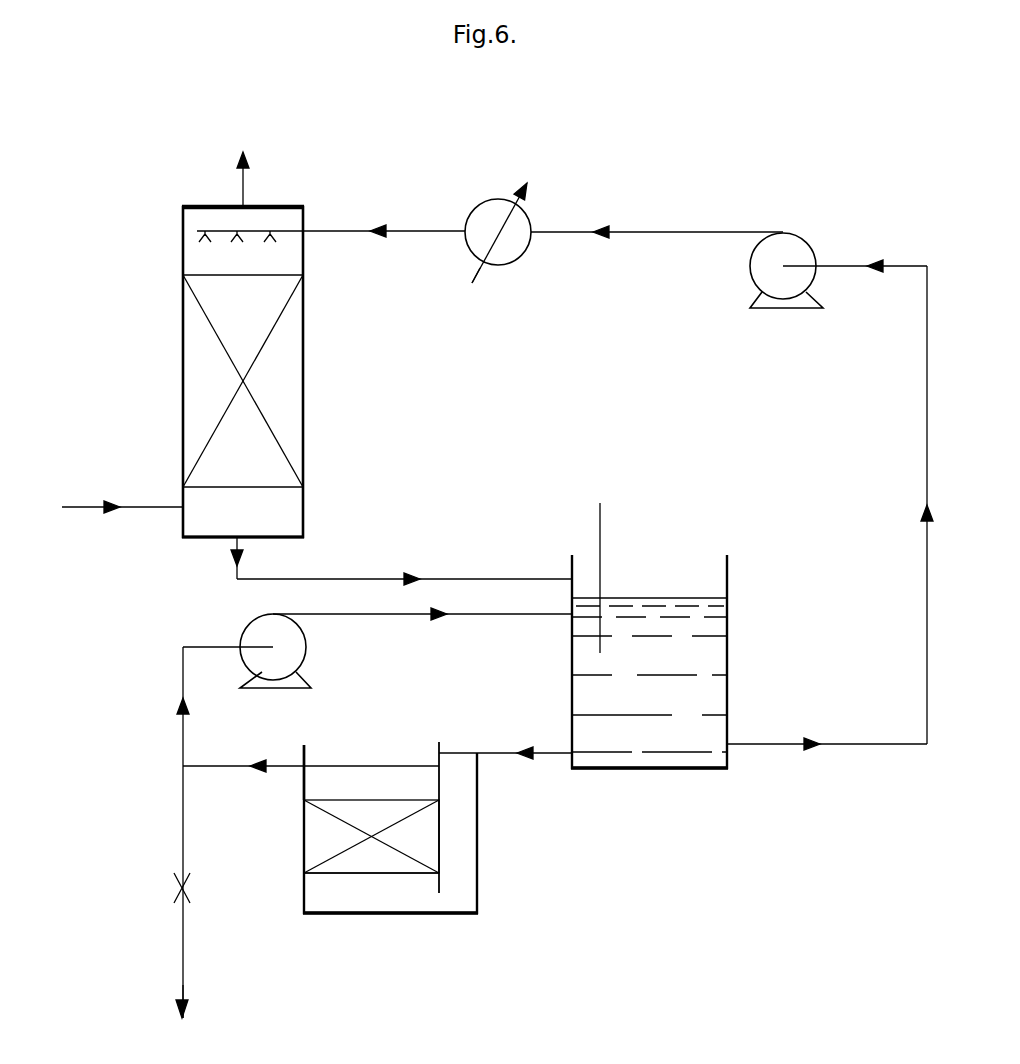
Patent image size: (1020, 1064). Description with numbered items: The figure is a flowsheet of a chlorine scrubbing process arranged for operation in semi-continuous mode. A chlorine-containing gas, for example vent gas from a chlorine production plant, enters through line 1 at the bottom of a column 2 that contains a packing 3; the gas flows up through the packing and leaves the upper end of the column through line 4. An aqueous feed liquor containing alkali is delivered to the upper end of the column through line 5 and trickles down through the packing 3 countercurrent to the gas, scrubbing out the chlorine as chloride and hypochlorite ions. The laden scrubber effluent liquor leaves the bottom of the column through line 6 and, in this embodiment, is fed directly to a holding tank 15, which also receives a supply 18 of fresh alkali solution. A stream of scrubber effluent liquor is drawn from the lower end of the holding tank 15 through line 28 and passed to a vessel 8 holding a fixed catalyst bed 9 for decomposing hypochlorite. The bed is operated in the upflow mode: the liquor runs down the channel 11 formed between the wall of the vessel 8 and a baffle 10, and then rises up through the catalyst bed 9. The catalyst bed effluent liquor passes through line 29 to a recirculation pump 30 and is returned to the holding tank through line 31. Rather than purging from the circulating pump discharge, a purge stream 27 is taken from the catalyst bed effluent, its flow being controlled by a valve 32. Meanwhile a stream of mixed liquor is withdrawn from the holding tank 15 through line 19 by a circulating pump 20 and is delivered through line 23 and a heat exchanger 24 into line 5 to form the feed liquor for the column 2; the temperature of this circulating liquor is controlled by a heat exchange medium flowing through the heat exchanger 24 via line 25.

The line 1 is at (137, 507).
The column 2 is at (303, 519).
The packing 3 is at (286, 389).
The line 4 is at (245, 190).
The line 5 is at (423, 231).
The line 6 is at (237, 540).
The vessel 8 is at (318, 784).
The catalyst bed 9 is at (316, 830).
The baffle 10 is at (440, 873).
The channel 11 is at (460, 817).
The holding tank 15 is at (727, 697).
The supply 18 is at (600, 533).
The line 19 is at (927, 690).
The circulating pump 20 is at (787, 234).
The line 23 is at (673, 233).
The heat exchanger 24 is at (500, 199).
The line 25 is at (472, 283).
The purge stream 27 is at (182, 980).
The line 28 is at (543, 750).
The line 29 is at (183, 670).
The recirculation pump 30 is at (248, 625).
The line 31 is at (348, 617).
The valve 32 is at (175, 878).